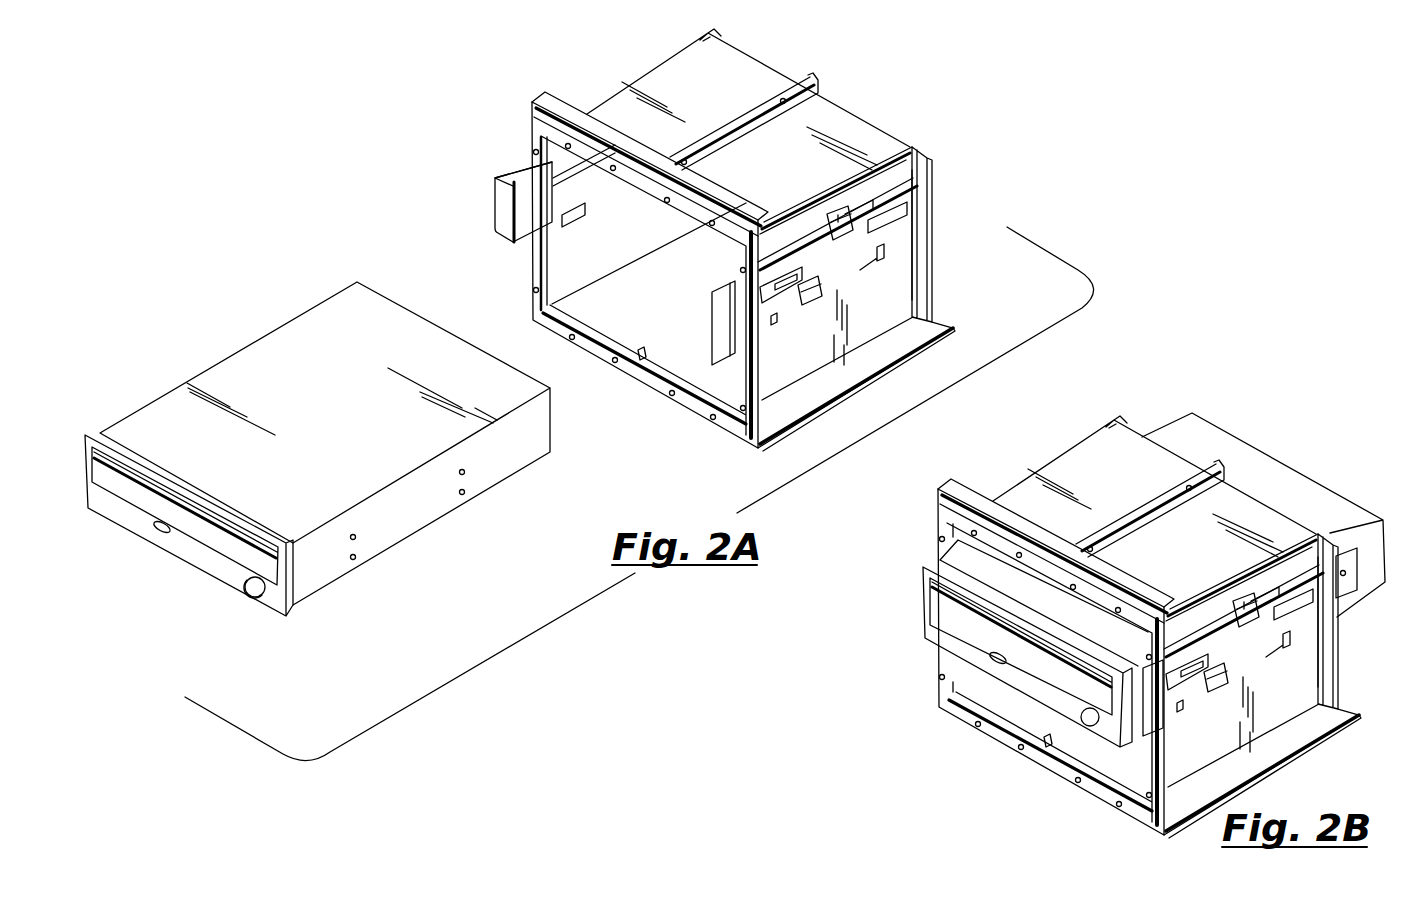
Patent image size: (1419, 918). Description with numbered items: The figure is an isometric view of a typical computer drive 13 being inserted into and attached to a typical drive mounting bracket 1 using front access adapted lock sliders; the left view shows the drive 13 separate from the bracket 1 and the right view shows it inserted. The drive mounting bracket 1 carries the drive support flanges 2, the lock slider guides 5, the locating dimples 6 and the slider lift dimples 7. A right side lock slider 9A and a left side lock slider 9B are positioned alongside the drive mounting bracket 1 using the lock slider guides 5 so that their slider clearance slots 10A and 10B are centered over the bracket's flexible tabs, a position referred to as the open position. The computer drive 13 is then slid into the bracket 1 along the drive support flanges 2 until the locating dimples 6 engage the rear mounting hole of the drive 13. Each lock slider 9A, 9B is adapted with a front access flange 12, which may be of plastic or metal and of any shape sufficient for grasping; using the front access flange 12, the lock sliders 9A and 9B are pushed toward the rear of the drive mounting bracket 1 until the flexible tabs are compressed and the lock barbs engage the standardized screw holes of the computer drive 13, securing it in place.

In FIG. 2A, the drive mounting bracket 1 is at (668, 78).
In FIG. 2B, the drive mounting bracket 1 is at (1093, 470).
In FIG. 2A, the drive support flanges 2 is at (873, 260).
In FIG. 2A, the lock slider guides 5 is at (838, 212).
In FIG. 2B, the lock slider guides 5 is at (1212, 677).
In FIG. 2A, the locating dimples 6 is at (893, 240).
In FIG. 2A, the slider lift dimples 7 is at (907, 212).
In FIG. 2A, the right side lock slider 9A is at (898, 186).
In FIG. 2A, the left side lock slider 9B is at (518, 168).
In FIG. 2A, the slider clearance slot 10A is at (777, 278).
In FIG. 2A, the slider clearance slot 10B is at (918, 210).
In FIG. 2A, the front access flange 12 is at (503, 207).
In FIG. 2A, the computer drive 13 is at (282, 358).
In FIG. 2B, the computer drive 13 is at (1277, 472).